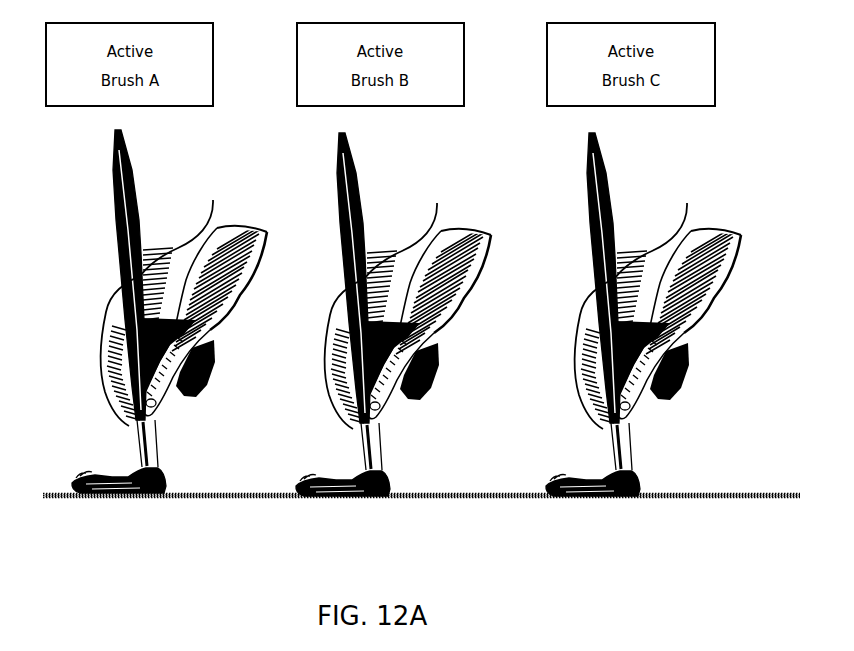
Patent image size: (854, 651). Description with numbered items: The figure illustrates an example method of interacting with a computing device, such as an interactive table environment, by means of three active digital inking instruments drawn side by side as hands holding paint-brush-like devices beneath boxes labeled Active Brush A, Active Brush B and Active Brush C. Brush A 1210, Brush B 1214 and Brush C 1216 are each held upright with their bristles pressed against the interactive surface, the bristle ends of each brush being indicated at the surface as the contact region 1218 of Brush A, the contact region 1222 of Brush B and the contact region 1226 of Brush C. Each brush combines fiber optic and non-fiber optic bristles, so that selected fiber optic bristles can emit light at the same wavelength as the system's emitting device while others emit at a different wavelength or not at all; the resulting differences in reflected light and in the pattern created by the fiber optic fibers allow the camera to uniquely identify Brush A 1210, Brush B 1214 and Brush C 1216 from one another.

The active brush A (brush held by hand) 1210 is at (151, 222).
The active brush B (brush held by hand) 1214 is at (369, 206).
The active brush C (brush held by hand) 1216 is at (660, 182).
The brush tip of brush A contacting surface 1218 is at (105, 493).
The brush tip of brush B contacting surface 1222 is at (347, 492).
The brush tip of brush C contacting surface 1226 is at (590, 493).